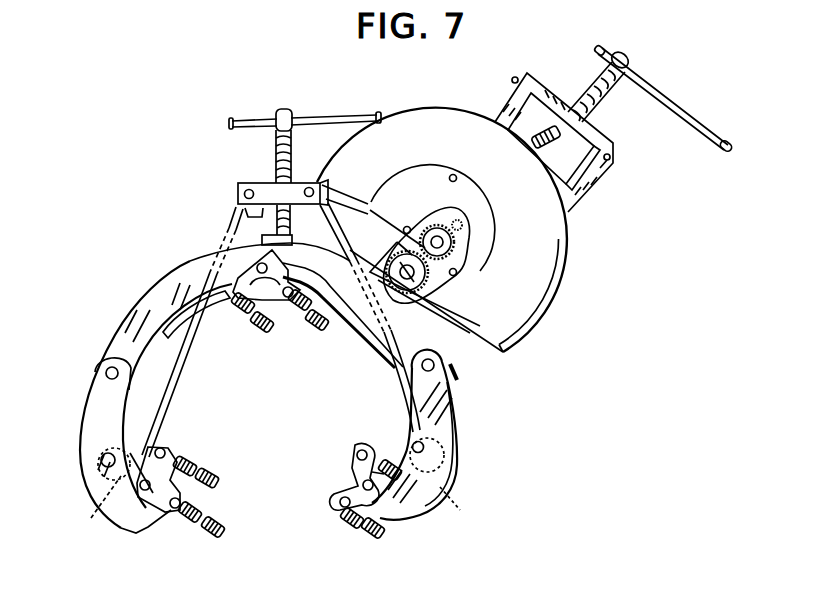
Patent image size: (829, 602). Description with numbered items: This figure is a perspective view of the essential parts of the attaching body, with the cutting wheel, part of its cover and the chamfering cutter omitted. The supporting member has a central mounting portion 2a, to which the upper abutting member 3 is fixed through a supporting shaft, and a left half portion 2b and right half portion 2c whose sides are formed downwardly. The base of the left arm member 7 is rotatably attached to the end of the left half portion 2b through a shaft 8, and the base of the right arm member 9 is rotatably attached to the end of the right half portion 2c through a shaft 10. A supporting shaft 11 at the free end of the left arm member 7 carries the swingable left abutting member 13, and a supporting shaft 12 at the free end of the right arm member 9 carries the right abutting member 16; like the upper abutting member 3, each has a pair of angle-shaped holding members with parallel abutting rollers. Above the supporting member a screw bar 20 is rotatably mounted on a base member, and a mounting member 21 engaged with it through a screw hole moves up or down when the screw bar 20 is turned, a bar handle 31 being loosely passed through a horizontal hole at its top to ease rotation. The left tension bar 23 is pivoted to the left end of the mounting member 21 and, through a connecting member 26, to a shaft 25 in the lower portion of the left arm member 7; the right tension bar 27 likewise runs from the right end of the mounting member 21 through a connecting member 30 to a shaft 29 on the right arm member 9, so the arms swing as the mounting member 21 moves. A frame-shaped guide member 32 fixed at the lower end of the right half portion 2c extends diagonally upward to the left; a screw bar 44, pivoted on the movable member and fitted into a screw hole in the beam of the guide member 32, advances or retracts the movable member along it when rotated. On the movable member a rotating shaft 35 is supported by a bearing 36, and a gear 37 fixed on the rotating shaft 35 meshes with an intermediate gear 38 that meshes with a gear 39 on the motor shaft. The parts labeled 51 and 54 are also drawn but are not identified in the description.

The mounting portion 2a is at (253, 246).
The left half portion 2b is at (136, 305).
The right half portion 2c is at (456, 352).
The upper abutting member 3 is at (290, 330).
The left arm member 7 is at (92, 405).
The shaft 8 is at (105, 373).
The right arm member 9 is at (454, 476).
The shaft 10 is at (421, 367).
The supporting shaft 11 is at (132, 502).
The supporting shaft 12 is at (360, 468).
The left abutting member 13 is at (162, 520).
The right abutting member 16 is at (352, 522).
The screw bar 20 is at (275, 150).
The mounting member 21 is at (238, 186).
The left tension bar 23 is at (238, 215).
The shaft 25 is at (102, 466).
The connecting member 26 is at (98, 510).
The right tension bar 27 is at (400, 402).
The shaft 29 is at (430, 452).
The connecting member 30 is at (460, 510).
The bar handle 31 is at (319, 120).
The guide member 32 is at (590, 180).
The rotating shaft 35 is at (417, 307).
The bearing 36 is at (448, 278).
The gear 37 is at (457, 272).
The intermediate gear 38 is at (460, 223).
The gear 39 is at (410, 250).
The screw bar 44 is at (602, 92).
The handle bar 51 is at (666, 88).
The segment disk 54 is at (562, 278).